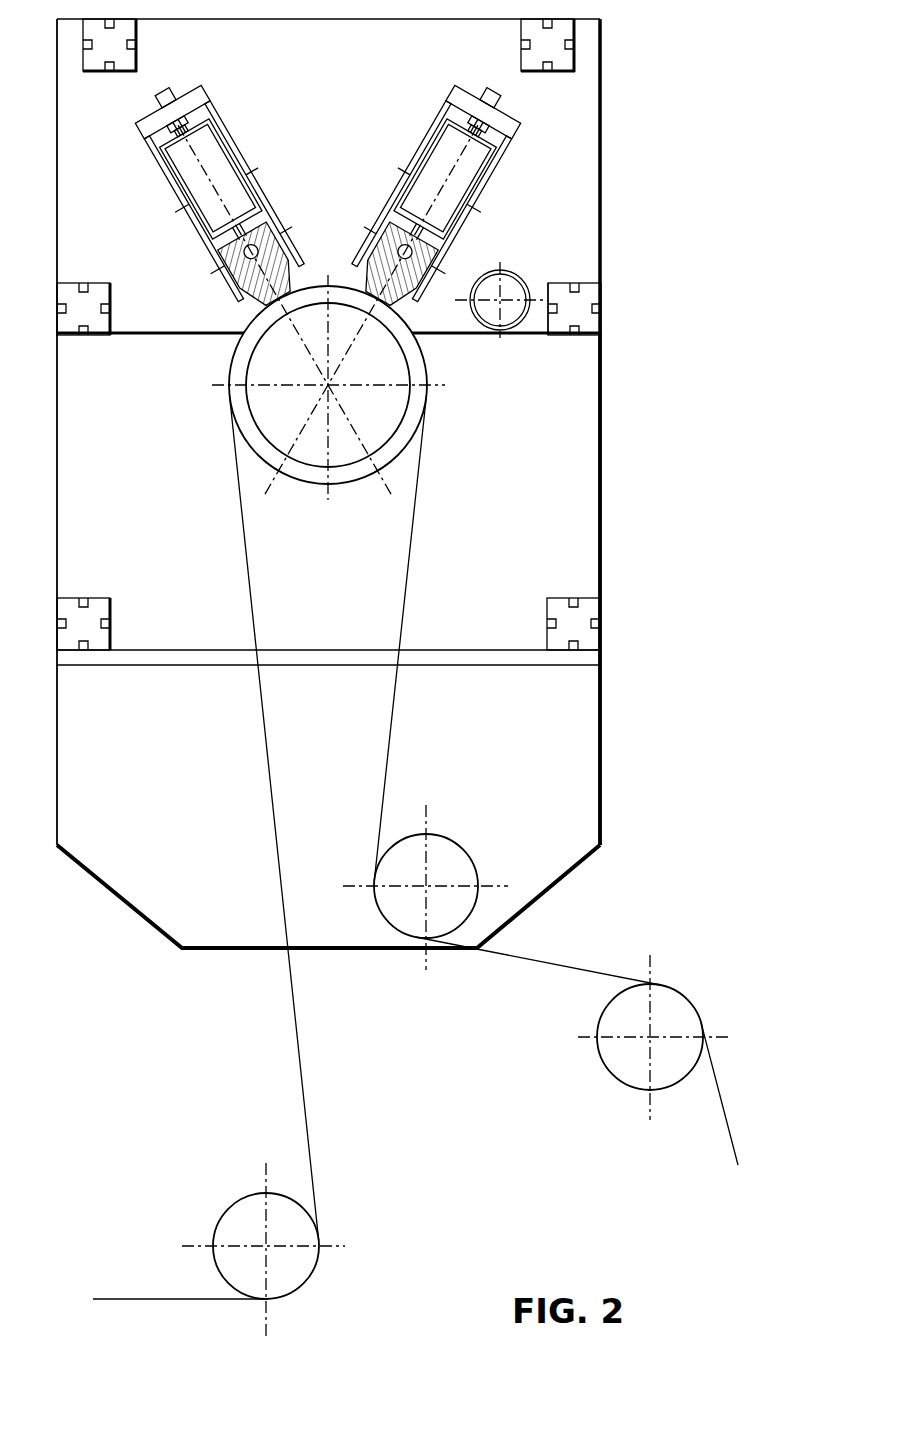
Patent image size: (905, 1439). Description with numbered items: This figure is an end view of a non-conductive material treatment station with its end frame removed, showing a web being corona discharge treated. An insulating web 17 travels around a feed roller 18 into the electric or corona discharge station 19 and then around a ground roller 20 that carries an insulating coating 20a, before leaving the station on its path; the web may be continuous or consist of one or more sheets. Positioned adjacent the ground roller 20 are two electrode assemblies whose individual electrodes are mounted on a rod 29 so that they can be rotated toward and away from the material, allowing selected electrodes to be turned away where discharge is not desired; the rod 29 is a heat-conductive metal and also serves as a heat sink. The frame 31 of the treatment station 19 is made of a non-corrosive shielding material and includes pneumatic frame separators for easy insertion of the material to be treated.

The insulating web 17 is at (305, 1104).
The feed roller 18 is at (293, 1279).
The corona discharge station 19 is at (87, 885).
The ground roller 20 is at (385, 415).
The insulating coating 20a is at (302, 486).
The rod 29 is at (263, 220).
The frame 31 is at (472, 227).